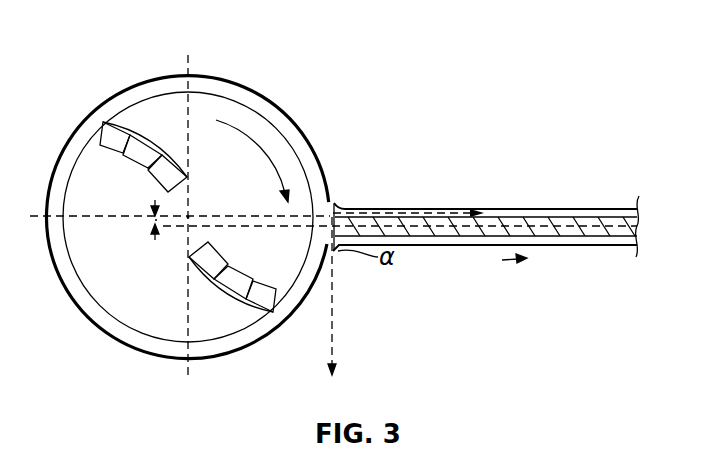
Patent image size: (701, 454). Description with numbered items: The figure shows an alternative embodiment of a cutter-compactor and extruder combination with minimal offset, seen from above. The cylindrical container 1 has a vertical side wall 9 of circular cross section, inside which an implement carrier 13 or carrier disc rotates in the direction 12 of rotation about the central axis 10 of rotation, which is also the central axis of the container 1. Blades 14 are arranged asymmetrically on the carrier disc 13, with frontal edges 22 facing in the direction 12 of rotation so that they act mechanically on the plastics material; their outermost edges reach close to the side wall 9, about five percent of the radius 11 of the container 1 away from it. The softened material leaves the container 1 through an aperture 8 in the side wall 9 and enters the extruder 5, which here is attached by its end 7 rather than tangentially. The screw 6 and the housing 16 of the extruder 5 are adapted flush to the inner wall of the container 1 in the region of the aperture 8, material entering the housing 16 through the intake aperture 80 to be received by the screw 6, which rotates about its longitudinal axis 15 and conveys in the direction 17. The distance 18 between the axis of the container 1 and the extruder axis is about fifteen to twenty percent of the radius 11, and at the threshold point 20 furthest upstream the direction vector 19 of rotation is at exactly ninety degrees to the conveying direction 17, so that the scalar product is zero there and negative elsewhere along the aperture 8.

The container 1 is at (89, 63).
The extruder 5 is at (486, 224).
The screw 6 is at (565, 238).
The end of the extruder 7 is at (356, 209).
The aperture 8 is at (322, 229).
The side wall 9 is at (203, 74).
The central axis of rotation 10 is at (192, 215).
The radius of the container 11 is at (227, 215).
The direction of rotation 12 is at (264, 142).
The implement carrier 13 is at (180, 180).
The blades 14 is at (112, 149).
The longitudinal axis 15 is at (157, 238).
The housing 16 is at (485, 190).
The direction of conveying 17 is at (403, 212).
The distance 18 is at (152, 226).
The direction vector 19 is at (334, 340).
The threshold point 20 is at (326, 219).
The frontal edges 22 is at (165, 132).
The intake aperture 80 is at (334, 253).